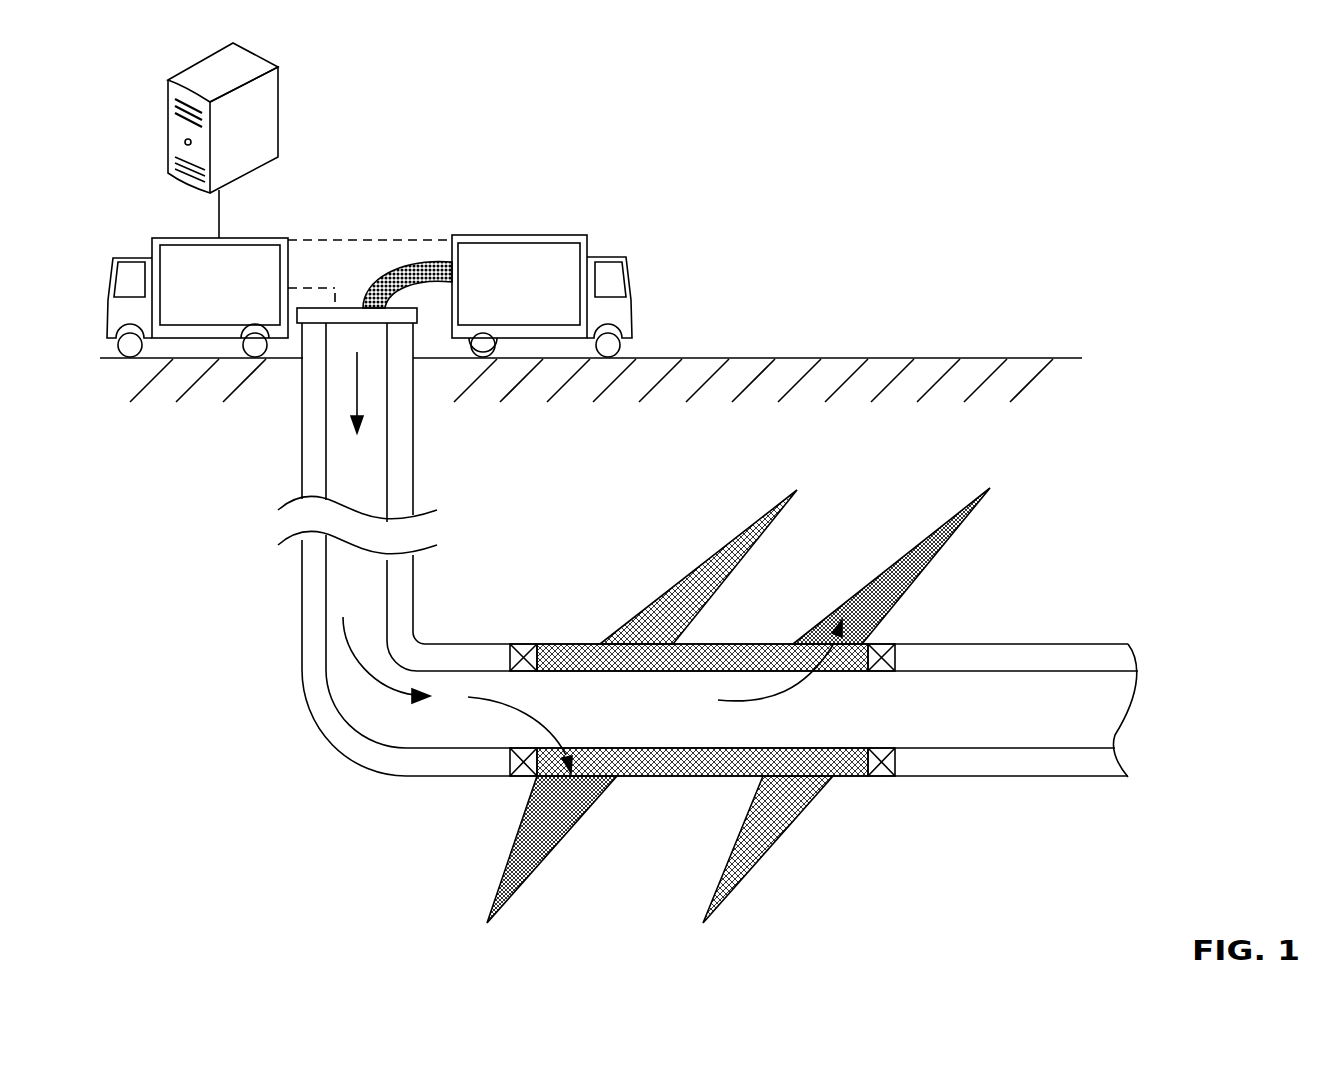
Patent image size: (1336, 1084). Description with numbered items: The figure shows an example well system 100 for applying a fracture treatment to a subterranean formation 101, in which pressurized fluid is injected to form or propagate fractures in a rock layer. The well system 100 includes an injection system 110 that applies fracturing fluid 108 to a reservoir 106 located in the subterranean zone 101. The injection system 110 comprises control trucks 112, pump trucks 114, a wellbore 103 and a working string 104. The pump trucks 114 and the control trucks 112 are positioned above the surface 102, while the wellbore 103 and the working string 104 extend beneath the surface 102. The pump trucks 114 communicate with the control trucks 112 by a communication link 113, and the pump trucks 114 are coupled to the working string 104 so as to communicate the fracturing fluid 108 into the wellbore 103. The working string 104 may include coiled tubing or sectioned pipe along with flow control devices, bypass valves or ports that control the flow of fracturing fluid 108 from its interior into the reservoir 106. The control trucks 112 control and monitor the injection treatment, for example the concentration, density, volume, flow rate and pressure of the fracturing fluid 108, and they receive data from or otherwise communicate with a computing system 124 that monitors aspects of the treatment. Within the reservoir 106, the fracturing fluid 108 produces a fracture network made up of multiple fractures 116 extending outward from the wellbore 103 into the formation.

The well system 100 is at (215, 890).
The subterranean formation 101 is at (975, 462).
The surface 102 is at (827, 357).
The wellbore 103 is at (312, 450).
The working string 104 is at (320, 670).
The reservoir 106 is at (1068, 866).
The fracturing fluid 108 is at (387, 690).
The injection system 110 is at (662, 240).
The control trucks 112 is at (243, 304).
The communication link 113 is at (367, 240).
The pump trucks 114 is at (543, 304).
The fractures 116 is at (753, 552).
The computing system 124 is at (280, 112).